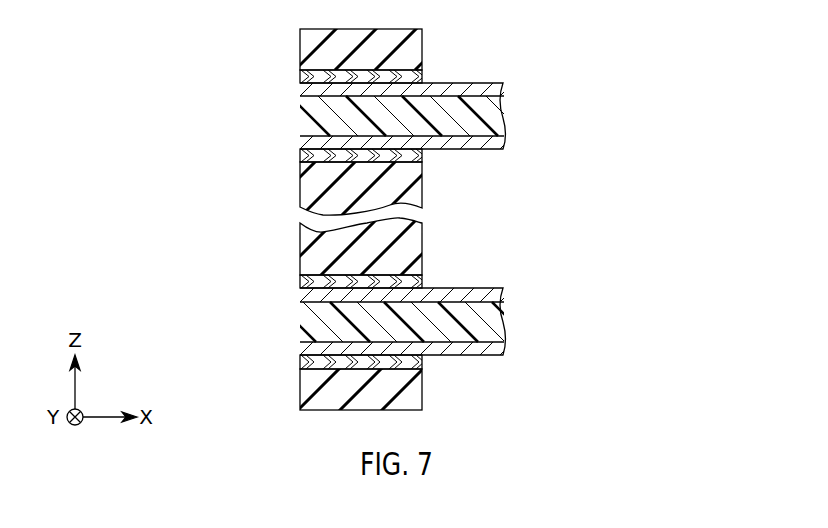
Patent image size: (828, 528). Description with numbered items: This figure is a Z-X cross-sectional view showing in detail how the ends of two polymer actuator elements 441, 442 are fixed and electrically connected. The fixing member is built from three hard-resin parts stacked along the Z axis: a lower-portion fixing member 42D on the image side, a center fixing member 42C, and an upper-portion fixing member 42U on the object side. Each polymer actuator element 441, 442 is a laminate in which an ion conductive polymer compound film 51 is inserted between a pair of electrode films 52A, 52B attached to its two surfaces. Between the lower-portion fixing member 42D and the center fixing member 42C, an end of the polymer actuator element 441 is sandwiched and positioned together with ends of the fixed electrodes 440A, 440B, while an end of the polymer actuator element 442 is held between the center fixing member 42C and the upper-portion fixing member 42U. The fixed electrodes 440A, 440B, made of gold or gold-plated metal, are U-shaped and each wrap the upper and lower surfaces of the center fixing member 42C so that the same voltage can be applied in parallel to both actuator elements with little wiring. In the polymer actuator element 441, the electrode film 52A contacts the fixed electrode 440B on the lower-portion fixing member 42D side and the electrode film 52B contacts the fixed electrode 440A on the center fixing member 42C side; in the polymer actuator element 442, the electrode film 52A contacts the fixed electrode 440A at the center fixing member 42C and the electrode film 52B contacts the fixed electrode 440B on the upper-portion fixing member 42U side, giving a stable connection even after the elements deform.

The upper-portion fixing member 42U is at (413, 48).
The center fixing member 42C is at (413, 181).
The lower-portion fixing member 42D is at (413, 395).
The fixed electrode 440A is at (302, 156).
The fixed electrode 440B is at (302, 76).
The electrode film 52B is at (505, 86).
The ion conductive polymer compound film 51 is at (487, 117).
The electrode film 52A is at (505, 143).
The polymer actuator element 442 is at (579, 78).
The polymer actuator element 441 is at (579, 283).